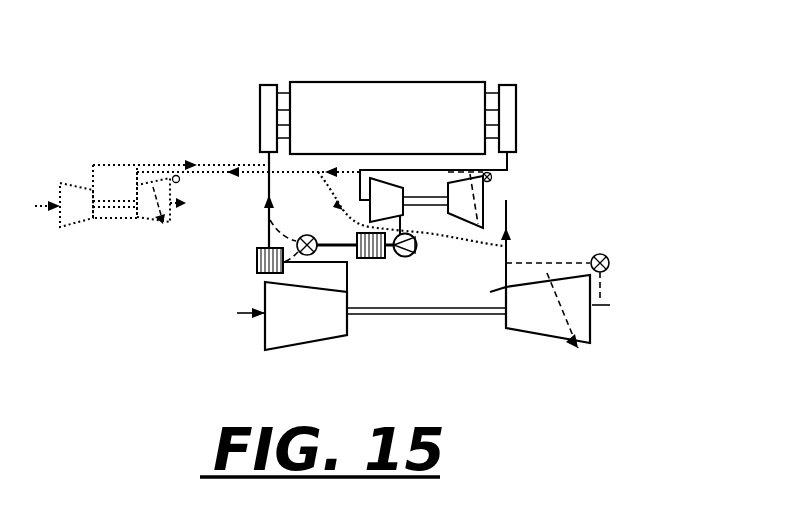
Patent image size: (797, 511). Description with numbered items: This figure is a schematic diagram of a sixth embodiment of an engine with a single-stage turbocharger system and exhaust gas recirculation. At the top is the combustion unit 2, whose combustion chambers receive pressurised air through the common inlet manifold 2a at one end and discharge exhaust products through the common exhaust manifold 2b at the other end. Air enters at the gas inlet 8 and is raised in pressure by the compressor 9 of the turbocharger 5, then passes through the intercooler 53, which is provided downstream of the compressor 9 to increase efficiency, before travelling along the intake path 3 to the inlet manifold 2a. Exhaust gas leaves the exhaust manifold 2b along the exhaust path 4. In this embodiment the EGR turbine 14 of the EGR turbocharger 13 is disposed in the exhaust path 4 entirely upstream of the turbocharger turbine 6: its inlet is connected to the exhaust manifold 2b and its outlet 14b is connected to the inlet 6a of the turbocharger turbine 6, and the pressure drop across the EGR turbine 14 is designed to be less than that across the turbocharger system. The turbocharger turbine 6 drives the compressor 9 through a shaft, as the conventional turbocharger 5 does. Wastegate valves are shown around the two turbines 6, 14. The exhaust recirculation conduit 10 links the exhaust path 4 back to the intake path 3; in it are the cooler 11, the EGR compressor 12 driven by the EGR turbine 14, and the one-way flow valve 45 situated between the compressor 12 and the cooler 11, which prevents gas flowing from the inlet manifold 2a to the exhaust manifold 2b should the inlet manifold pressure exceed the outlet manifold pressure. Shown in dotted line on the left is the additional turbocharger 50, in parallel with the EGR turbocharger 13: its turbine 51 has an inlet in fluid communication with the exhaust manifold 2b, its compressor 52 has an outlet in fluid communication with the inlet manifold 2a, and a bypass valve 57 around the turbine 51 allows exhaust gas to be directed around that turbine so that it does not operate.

The combustion unit 2 is at (432, 97).
The inlet manifold 2a is at (266, 100).
The exhaust manifold 2b is at (512, 107).
The intake path 3 is at (264, 182).
The exhaust path 4 is at (508, 158).
The turbocharger 5 is at (417, 340).
The turbocharger turbine 6 is at (590, 318).
The turbine inlet 6a is at (506, 287).
The gas inlet 8 is at (237, 313).
The compressor 9 is at (303, 347).
The exhaust recirculation conduit 10 is at (270, 222).
The cooler 11 is at (367, 258).
The EGR compressor 12 is at (387, 179).
The EGR turbocharger 13 is at (517, 174).
The EGR turbine 14 is at (483, 187).
The EGR turbine outlet 14b is at (483, 205).
The one-way flow valve 45 is at (407, 257).
The additional turbocharger 50 is at (109, 232).
The turbine 51 is at (150, 222).
The compressor 52 is at (80, 222).
The intercooler 53 is at (257, 264).
The bypass valve 57 is at (180, 182).